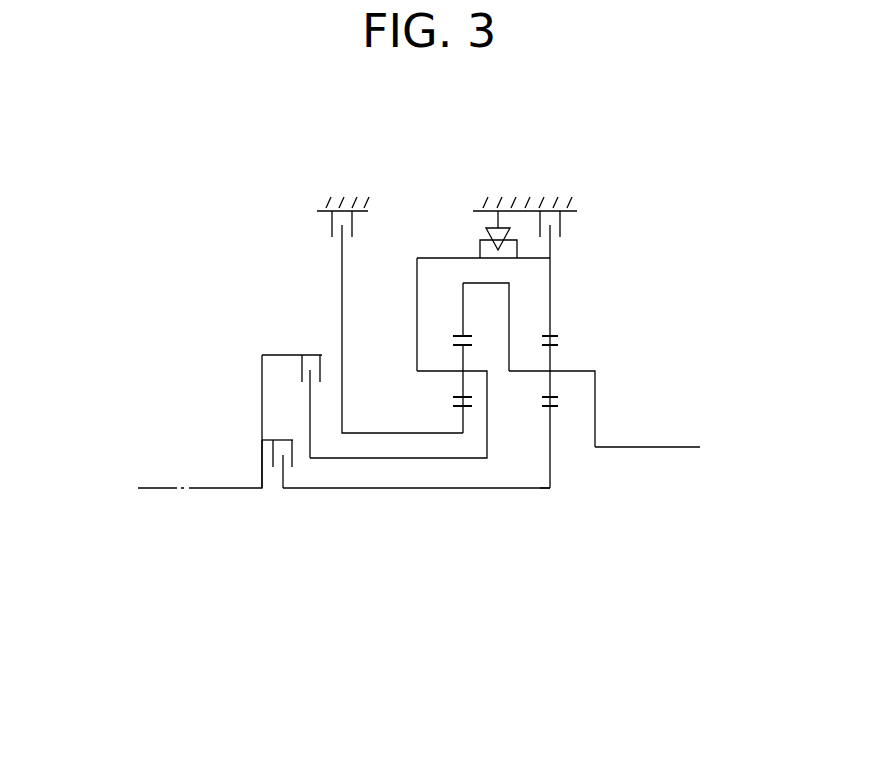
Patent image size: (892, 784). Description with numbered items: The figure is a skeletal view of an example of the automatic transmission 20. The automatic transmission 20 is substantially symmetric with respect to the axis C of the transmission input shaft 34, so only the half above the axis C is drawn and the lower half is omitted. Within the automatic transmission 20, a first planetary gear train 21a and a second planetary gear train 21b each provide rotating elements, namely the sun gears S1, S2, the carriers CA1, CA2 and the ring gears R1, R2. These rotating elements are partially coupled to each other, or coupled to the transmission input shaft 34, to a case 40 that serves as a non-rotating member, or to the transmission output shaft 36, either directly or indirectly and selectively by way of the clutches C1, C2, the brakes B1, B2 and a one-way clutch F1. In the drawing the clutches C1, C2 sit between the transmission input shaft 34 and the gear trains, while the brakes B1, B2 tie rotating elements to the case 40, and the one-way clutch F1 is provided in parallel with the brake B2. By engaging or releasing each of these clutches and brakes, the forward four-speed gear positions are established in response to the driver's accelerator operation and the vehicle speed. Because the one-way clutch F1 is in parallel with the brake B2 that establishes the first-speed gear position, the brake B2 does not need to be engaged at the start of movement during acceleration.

The automatic transmission 20 is at (505, 152).
The case 40 is at (340, 203).
The brake B1 is at (380, 322).
The brake B2 is at (569, 224).
The one-way clutch F1 is at (486, 234).
The ring gear R1 is at (458, 335).
The ring gear R2 is at (556, 335).
The sun gear S1 is at (460, 406).
The sun gear S2 is at (553, 409).
The carrier CA1 is at (432, 371).
The carrier CA2 is at (584, 368).
The clutch C1 is at (279, 450).
The clutch C2 is at (293, 394).
The transmission input shaft 34 is at (240, 486).
The transmission output shaft 36 is at (627, 446).
The first planetary gear train 21a is at (458, 498).
The second planetary gear train 21b is at (548, 498).
The axis C is at (152, 484).